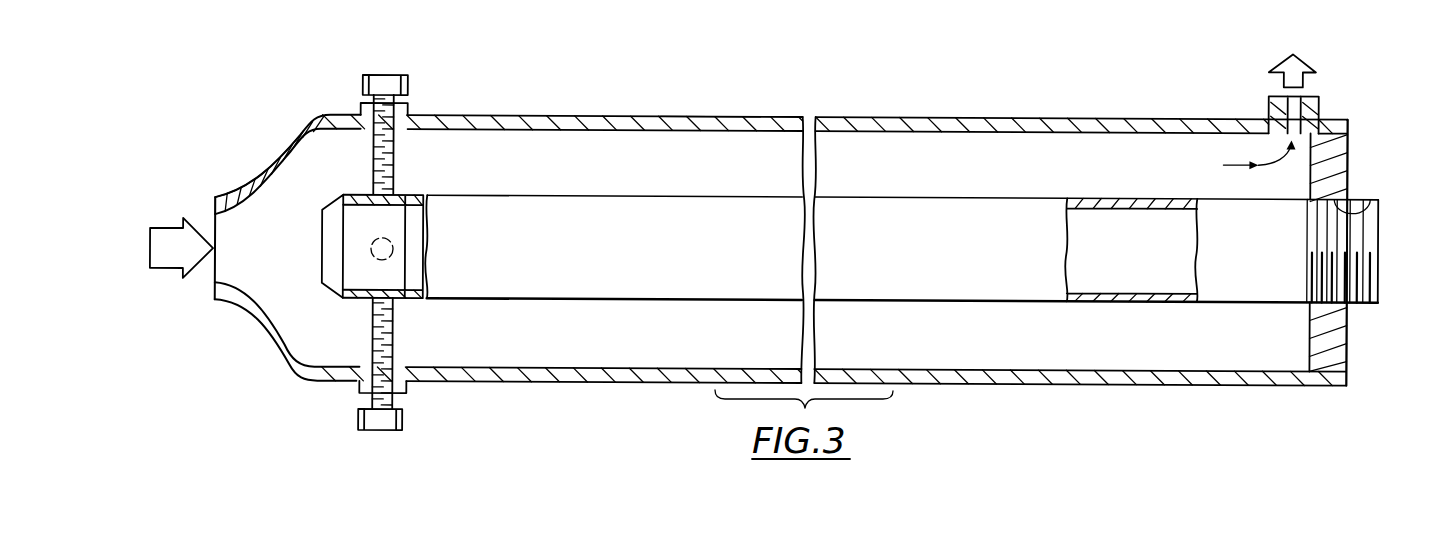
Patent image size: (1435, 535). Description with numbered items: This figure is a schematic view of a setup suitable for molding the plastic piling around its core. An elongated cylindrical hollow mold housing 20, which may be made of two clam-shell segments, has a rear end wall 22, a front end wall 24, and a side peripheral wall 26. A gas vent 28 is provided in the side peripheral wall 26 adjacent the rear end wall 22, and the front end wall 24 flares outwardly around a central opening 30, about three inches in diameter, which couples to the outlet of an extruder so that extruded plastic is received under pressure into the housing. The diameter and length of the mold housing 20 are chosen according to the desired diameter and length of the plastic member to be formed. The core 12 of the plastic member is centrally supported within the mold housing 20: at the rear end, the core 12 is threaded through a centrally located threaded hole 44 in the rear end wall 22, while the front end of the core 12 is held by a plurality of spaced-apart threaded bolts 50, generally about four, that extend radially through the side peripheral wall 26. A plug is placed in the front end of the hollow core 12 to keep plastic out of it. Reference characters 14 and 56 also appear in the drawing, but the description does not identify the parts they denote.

The core 12 is at (560, 213).
The outer shell 14 is at (483, 148).
The mold housing 20 is at (918, 110).
The rear end wall 22 is at (1338, 170).
The front end wall 24 is at (264, 180).
The side peripheral wall 26 is at (693, 125).
The gas vent 28 is at (1322, 109).
The central opening 30 is at (231, 268).
The threaded hole 44 is at (1378, 201).
The threaded bolts 50 is at (387, 76).
The mounting block 56 is at (360, 278).